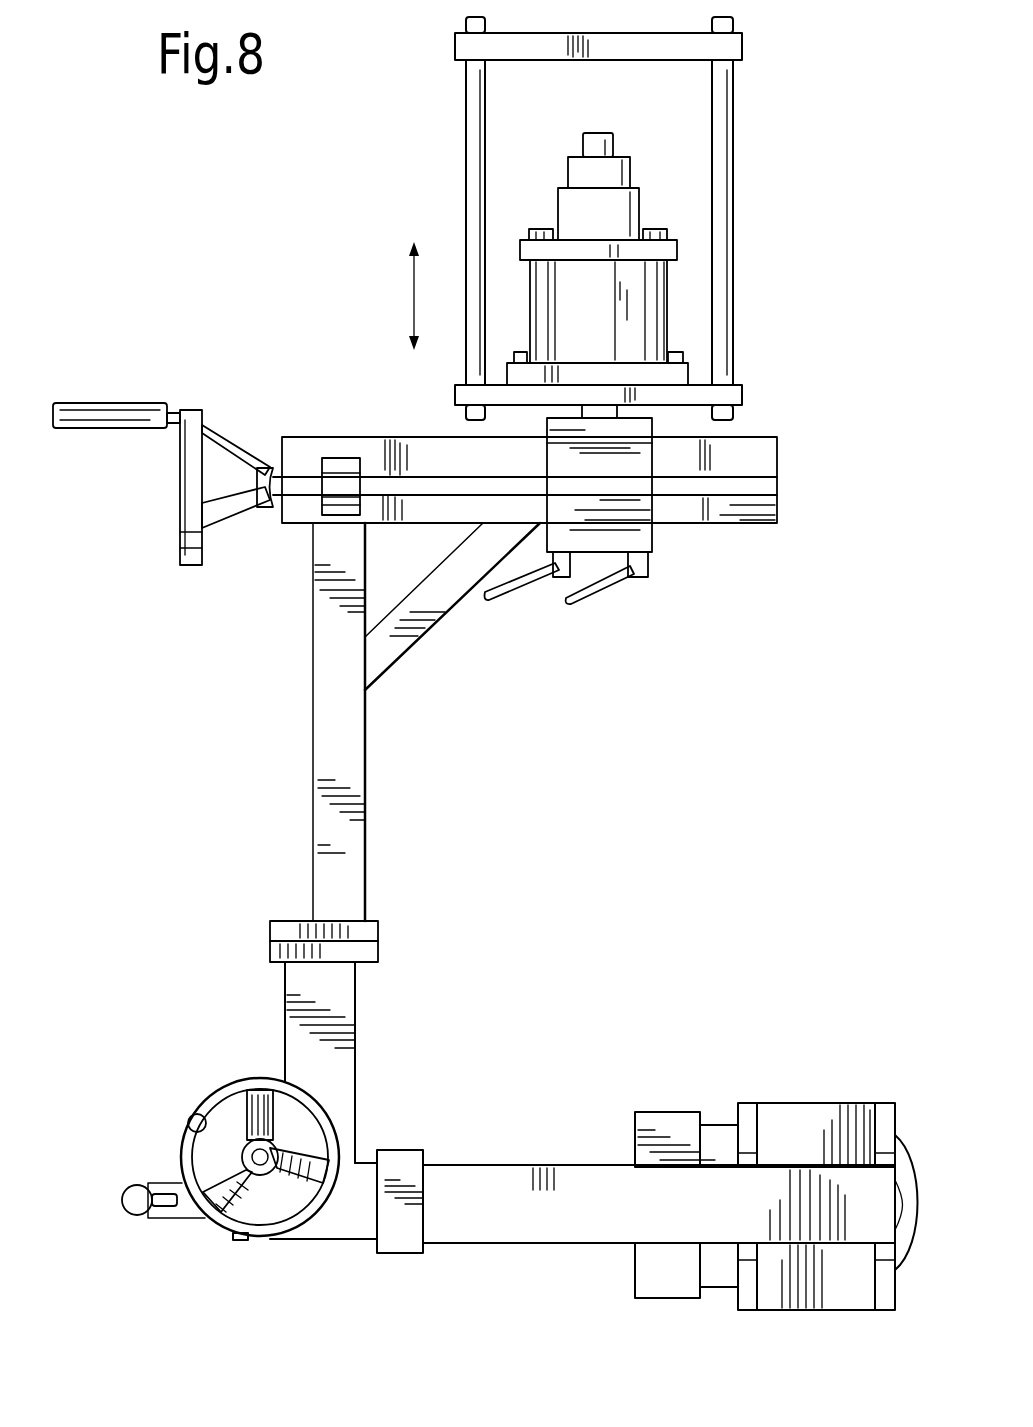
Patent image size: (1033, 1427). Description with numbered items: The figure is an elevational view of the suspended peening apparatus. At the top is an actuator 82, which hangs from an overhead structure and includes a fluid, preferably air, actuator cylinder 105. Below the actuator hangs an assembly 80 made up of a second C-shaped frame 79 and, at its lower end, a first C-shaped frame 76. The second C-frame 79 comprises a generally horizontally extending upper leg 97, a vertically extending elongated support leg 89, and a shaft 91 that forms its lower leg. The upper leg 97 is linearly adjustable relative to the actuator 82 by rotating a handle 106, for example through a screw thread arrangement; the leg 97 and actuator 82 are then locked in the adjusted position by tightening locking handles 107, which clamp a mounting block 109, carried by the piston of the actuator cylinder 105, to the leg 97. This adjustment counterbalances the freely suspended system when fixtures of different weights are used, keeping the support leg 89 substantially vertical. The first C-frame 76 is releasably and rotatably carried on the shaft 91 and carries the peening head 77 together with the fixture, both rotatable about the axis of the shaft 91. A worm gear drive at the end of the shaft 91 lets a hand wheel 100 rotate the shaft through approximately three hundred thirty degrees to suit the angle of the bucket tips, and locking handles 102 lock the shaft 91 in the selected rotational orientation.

The actuator 82 is at (380, 161).
The actuator cylinder 105 is at (608, 303).
The handle 106 is at (138, 412).
The upper leg 97 is at (365, 445).
The mounting block 109 is at (637, 532).
The locking handles 107 is at (498, 593).
The second C-shaped frame 79 is at (224, 661).
The assembly 80 is at (622, 657).
The elongated support leg 89 is at (338, 738).
The hand wheel 100 is at (230, 1093).
The locking handles 102 is at (137, 1185).
The shaft 91 is at (497, 1183).
The C-shaped frame 76 is at (677, 1123).
The peening head 77 is at (912, 1150).